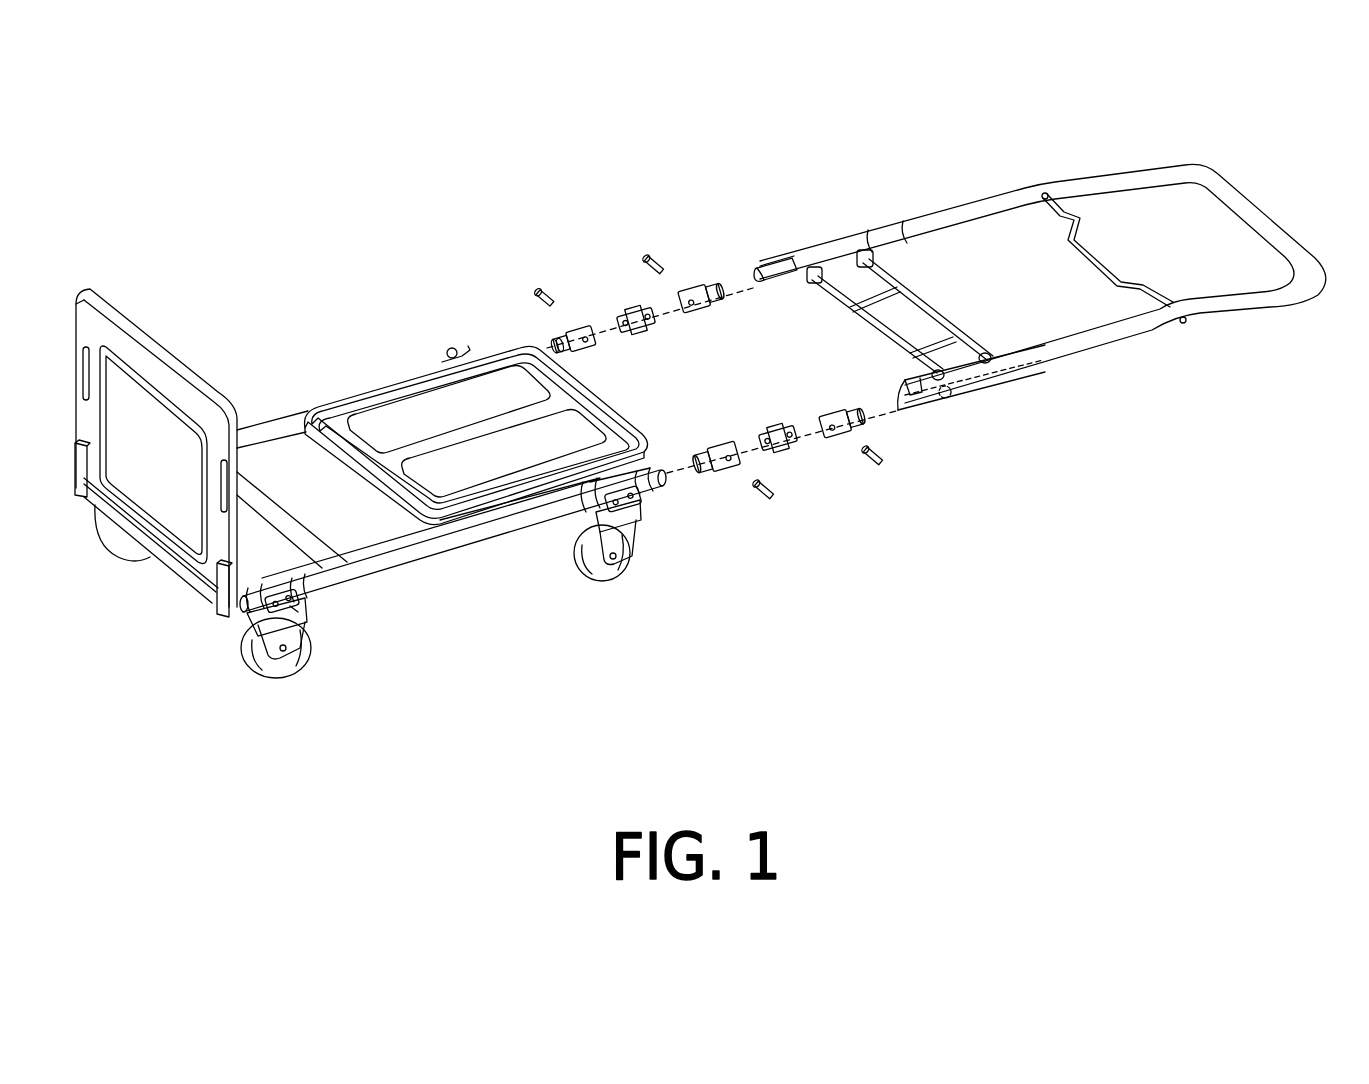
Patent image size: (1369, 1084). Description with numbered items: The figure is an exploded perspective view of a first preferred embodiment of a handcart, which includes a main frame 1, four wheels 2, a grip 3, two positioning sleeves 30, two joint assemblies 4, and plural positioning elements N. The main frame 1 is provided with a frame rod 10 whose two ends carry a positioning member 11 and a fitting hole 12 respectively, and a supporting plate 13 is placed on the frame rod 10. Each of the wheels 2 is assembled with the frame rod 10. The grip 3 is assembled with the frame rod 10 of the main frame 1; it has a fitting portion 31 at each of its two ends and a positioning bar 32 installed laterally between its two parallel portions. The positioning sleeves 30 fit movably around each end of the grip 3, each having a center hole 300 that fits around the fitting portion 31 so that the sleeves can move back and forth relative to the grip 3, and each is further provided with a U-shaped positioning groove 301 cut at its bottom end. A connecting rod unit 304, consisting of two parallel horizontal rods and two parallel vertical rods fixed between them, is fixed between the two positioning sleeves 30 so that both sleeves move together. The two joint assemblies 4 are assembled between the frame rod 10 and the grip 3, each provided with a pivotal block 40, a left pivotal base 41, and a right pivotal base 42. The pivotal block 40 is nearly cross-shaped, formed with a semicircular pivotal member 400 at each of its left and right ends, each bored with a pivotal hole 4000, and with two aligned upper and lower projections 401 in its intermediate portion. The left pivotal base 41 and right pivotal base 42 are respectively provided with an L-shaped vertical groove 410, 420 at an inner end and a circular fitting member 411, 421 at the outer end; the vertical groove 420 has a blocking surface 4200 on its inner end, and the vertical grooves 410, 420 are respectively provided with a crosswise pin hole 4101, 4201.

The main frame 1 is at (397, 574).
The wheel 2 is at (307, 650).
The grip 3 is at (1243, 313).
The joint assembly 4 is at (907, 560).
The frame rod 10 is at (282, 427).
The positioning member 11 is at (657, 490).
The fitting hole 12 is at (672, 473).
The supporting plate 13 is at (150, 333).
The positioning sleeve 30 is at (872, 230).
The fitting portion 31 is at (1003, 377).
The positioning bar 32 is at (1097, 257).
The pivotal block 40 is at (762, 432).
The left pivotal base 41 is at (575, 352).
The right pivotal base 42 is at (838, 407).
The positioning element N is at (540, 290).
The center hole 300 is at (757, 263).
The U-shaped positioning groove 301 is at (780, 258).
The connecting rod unit 304 is at (937, 310).
The semicircular pivotal member 400 is at (770, 450).
The projection 401 is at (777, 427).
The vertical groove 410 is at (580, 318).
The circular fitting member 411 is at (555, 340).
The vertical groove 420 is at (827, 417).
The circular fitting member 421 is at (860, 418).
The pivotal hole 4000 is at (793, 447).
The crosswise pin hole 4101 is at (590, 336).
The blocking surface 4200 is at (833, 432).
The crosswise pin hole 4201 is at (848, 427).